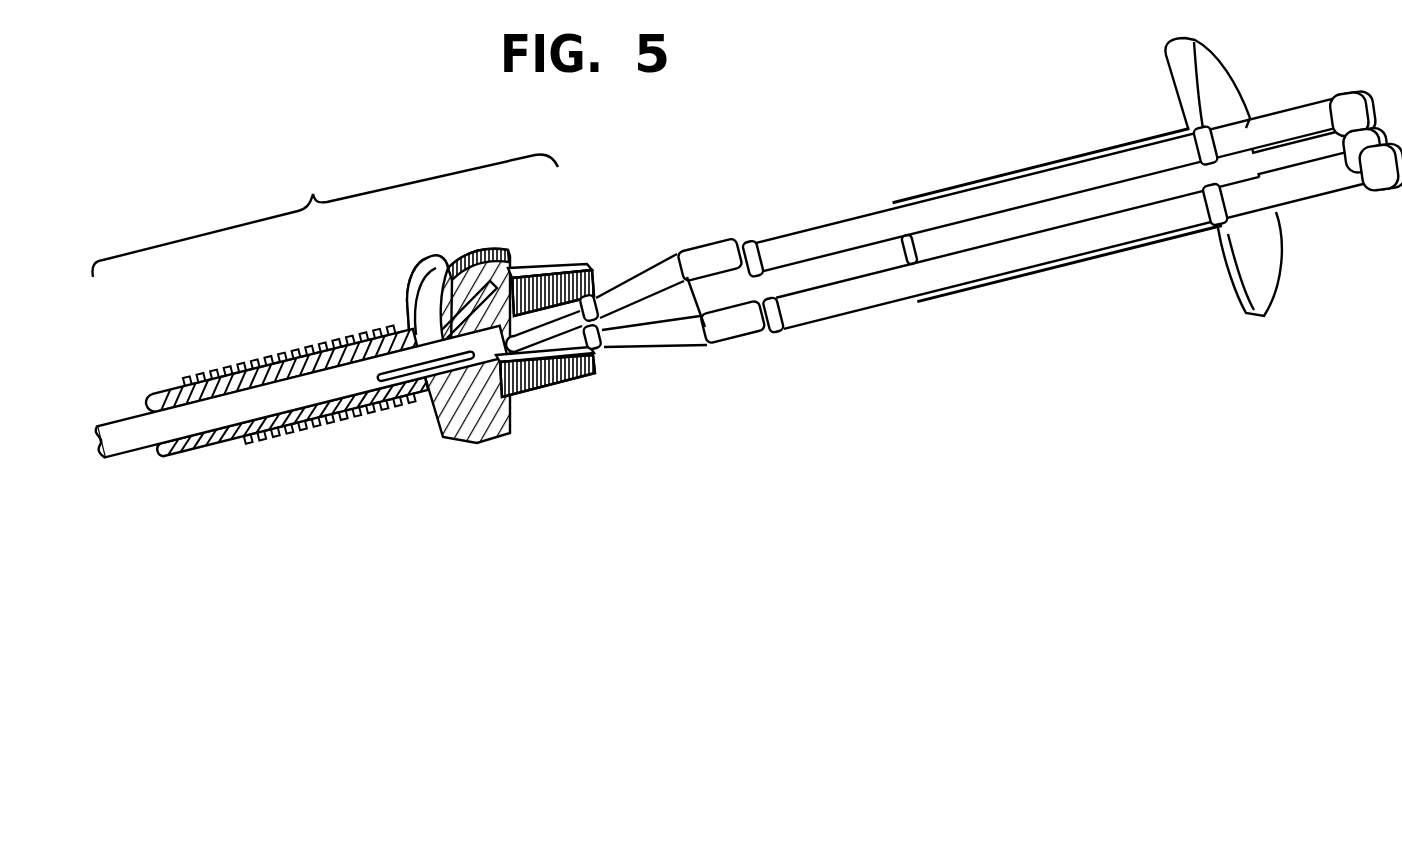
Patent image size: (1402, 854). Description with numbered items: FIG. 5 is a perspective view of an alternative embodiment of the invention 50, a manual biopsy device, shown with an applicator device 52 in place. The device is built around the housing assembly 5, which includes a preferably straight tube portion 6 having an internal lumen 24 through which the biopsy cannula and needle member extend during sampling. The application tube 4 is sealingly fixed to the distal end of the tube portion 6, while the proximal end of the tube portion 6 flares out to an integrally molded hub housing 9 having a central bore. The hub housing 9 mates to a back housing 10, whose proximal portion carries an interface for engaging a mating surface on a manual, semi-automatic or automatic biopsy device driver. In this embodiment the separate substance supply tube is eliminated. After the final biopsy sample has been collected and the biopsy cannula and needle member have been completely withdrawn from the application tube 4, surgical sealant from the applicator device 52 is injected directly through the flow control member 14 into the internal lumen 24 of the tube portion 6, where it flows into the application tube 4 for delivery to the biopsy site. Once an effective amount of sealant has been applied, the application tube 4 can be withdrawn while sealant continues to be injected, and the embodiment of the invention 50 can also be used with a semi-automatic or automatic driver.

The application tube 4 is at (128, 440).
The housing assembly 5 is at (325, 208).
The tube portion 6 is at (377, 415).
The hub housing 9 is at (412, 333).
The back housing 10 is at (548, 277).
The flow control member 14 is at (537, 400).
The internal lumen 24 is at (232, 408).
The invention 50 is at (493, 480).
The applicator device 52 is at (945, 331).